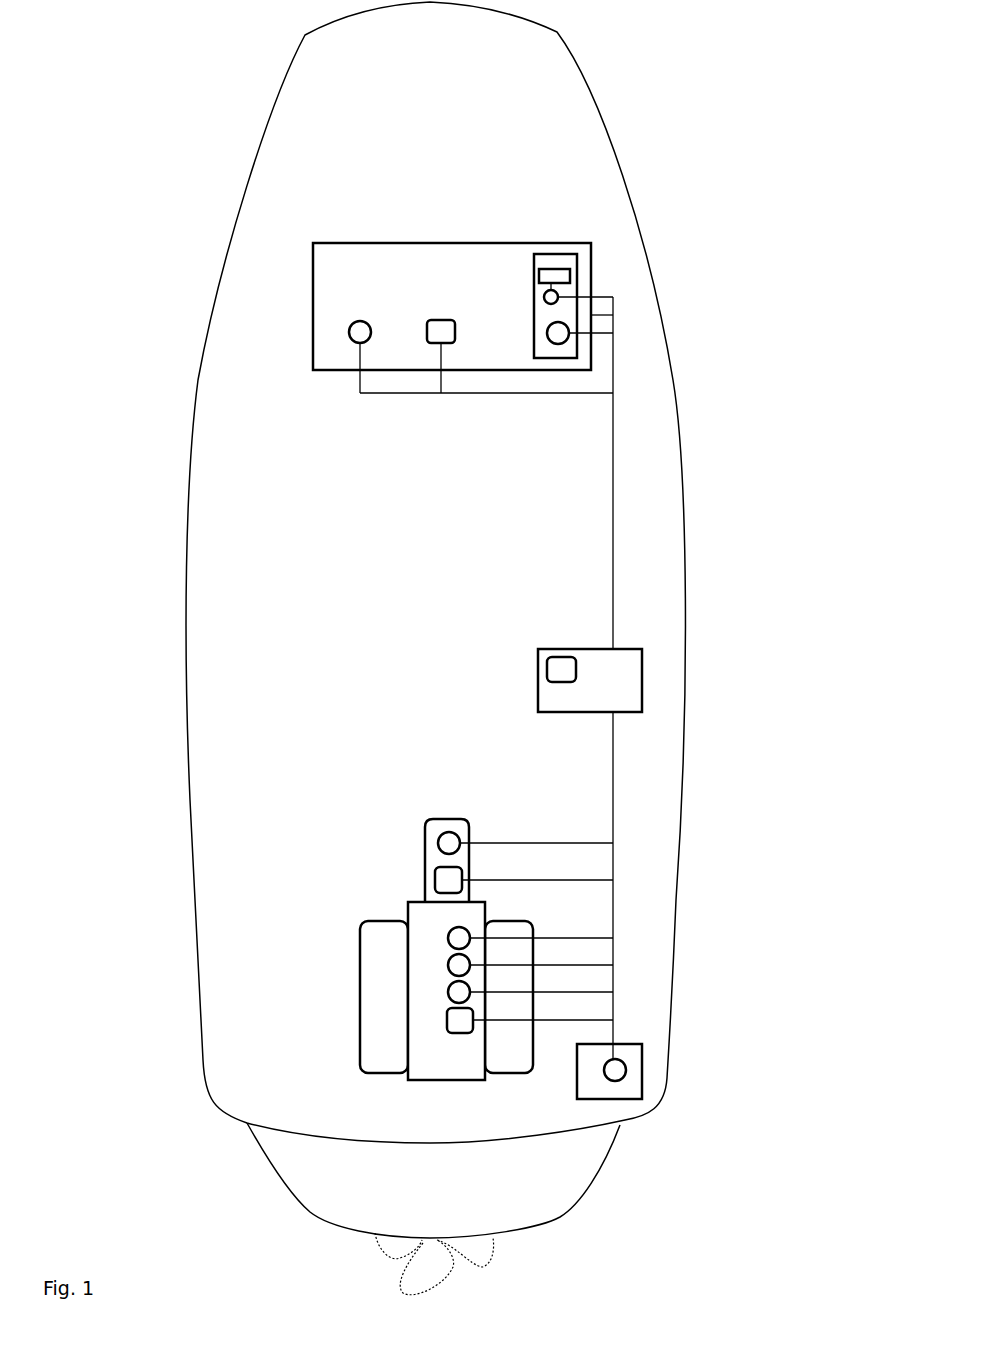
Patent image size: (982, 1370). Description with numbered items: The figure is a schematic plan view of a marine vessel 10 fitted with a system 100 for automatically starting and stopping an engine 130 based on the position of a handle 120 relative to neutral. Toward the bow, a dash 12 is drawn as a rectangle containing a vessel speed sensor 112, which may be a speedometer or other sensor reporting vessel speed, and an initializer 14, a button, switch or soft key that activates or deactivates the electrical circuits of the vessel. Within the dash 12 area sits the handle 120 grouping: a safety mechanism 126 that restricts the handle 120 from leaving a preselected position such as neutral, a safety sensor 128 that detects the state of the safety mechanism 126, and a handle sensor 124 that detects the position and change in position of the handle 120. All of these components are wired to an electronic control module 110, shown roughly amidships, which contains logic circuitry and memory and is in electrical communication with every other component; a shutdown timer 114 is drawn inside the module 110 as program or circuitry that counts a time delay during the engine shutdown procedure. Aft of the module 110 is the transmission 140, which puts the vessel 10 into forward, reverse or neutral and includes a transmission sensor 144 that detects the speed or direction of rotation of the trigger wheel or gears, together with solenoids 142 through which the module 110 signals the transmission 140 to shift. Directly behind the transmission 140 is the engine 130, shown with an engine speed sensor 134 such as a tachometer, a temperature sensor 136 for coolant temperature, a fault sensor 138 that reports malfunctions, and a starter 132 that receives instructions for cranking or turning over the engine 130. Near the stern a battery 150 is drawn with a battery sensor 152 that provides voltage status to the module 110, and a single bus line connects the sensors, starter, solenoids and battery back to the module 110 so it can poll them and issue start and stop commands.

The system 100 is at (712, 90).
The vessel 10 is at (228, 213).
The dash 12 is at (486, 320).
The vessel speed sensor 112 is at (351, 325).
The initializer 14 is at (427, 340).
The handle 120 is at (612, 320).
The safety mechanism 126 is at (570, 277).
The safety sensor 128 is at (558, 291).
The handle sensor 124 is at (549, 342).
The electronic control module 110 is at (547, 680).
The shutdown timer 114 is at (548, 668).
The transmission 140 is at (472, 832).
The transmission sensor 144 is at (438, 838).
The solenoids 142 is at (435, 877).
The engine 130 is at (400, 1045).
The engine speed sensor 134 is at (447, 937).
The temperature sensor 136 is at (447, 965).
The fault sensor 138 is at (447, 992).
The starter 132 is at (447, 1020).
The battery 150 is at (656, 1110).
The battery sensor 152 is at (626, 1066).